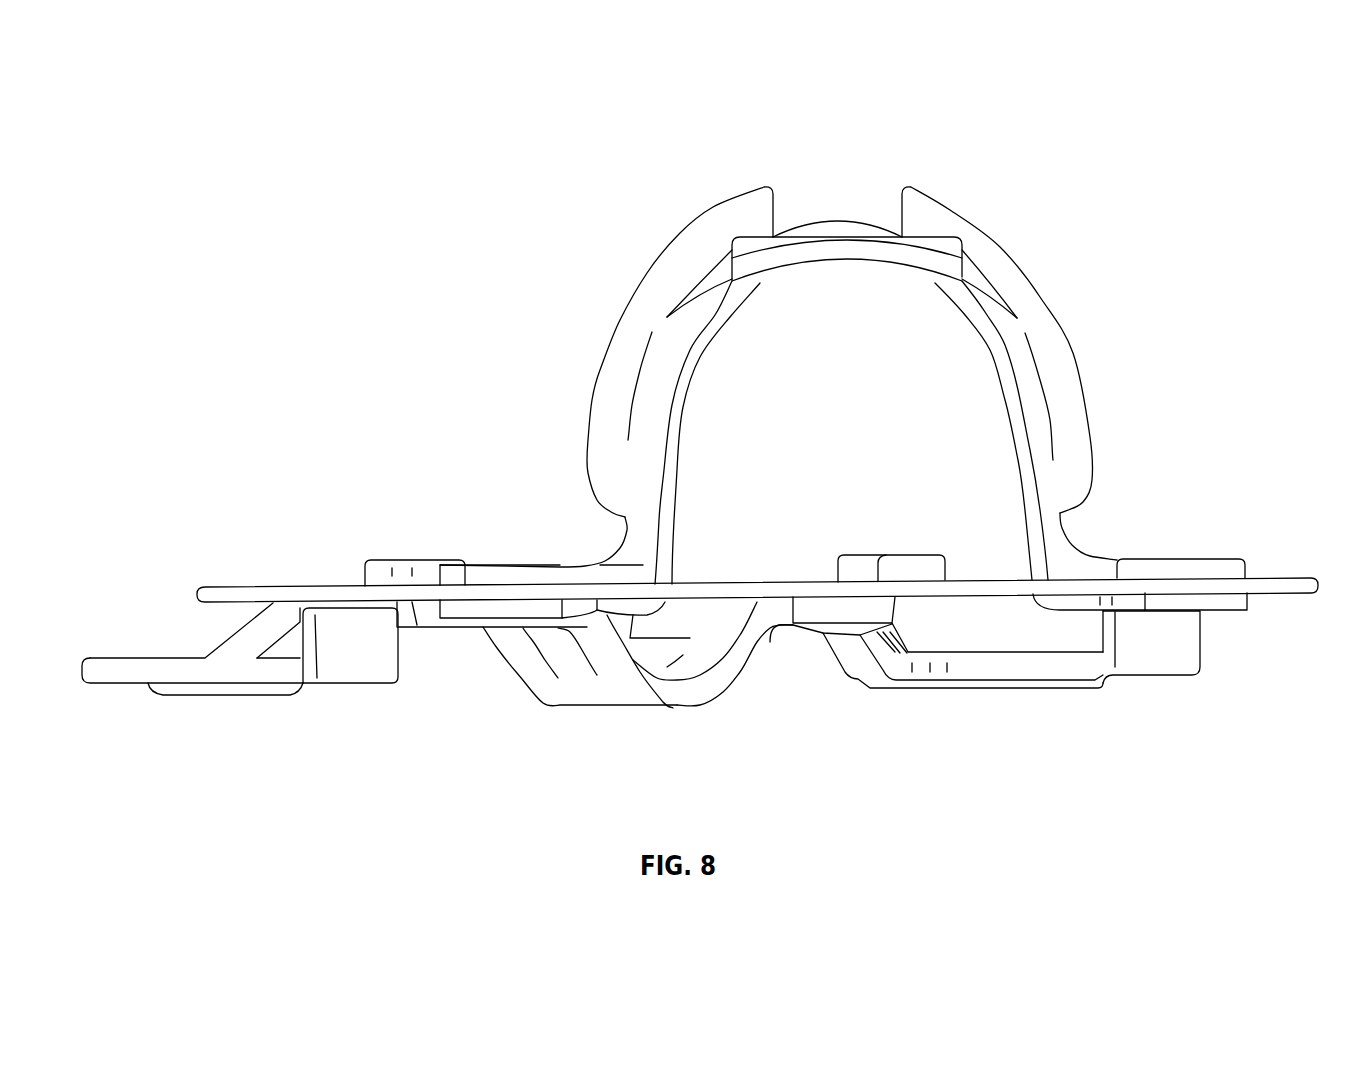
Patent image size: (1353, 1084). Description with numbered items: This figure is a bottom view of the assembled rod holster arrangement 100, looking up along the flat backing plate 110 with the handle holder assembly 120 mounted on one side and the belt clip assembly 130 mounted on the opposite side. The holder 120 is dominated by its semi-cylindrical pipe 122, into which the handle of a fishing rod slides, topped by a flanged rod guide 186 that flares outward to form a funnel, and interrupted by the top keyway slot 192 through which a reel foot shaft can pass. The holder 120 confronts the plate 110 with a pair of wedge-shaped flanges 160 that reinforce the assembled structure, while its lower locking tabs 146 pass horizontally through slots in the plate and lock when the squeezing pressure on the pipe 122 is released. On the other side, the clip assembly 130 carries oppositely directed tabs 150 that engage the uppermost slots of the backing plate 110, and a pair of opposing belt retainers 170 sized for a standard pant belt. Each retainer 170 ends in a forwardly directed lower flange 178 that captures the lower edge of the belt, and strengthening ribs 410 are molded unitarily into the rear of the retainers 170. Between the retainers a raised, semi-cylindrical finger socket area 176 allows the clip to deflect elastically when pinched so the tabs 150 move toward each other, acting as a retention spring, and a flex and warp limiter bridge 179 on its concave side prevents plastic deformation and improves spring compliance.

The rod holster arrangement 100 is at (508, 462).
The backing plate 110 is at (1279, 579).
The handle holder assembly 120 is at (1025, 300).
The semi-cylindrical pipe 122 is at (1045, 430).
The belt clip assembly 130 is at (980, 690).
The lower locking tabs 146 is at (623, 605).
The tabs 150 is at (400, 563).
The wedge-shaped flanges 160 is at (510, 570).
The belt retainers 170 is at (182, 672).
The raised finger socket area 176 is at (602, 692).
The lower flange 178 is at (360, 672).
The flex and warp limiter bridge 179 is at (652, 656).
The flanged rod guide 186 is at (1065, 337).
The top keyway slot 192 is at (845, 206).
The strengthening ribs 410 is at (227, 695).